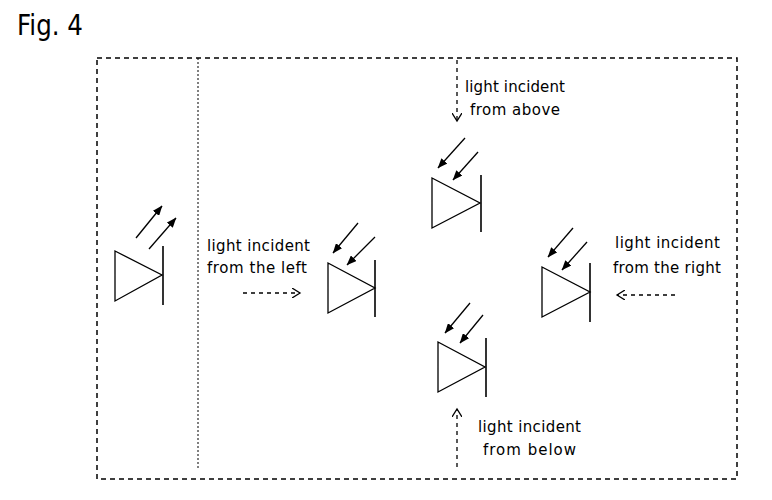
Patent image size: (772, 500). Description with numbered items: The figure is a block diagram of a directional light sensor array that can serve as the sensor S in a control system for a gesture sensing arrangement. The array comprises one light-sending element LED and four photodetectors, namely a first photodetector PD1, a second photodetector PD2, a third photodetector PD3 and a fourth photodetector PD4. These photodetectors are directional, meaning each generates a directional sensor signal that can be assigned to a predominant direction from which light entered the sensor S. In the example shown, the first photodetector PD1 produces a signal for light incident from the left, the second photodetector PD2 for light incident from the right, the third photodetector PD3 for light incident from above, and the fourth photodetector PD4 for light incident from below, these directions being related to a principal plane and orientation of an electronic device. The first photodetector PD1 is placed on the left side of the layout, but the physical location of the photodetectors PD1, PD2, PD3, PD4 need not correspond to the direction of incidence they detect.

The sensor S is at (400, 268).
The light-sending element LED is at (145, 280).
The first photodetector PD1 is at (327, 288).
The second photodetector PD2 is at (556, 291).
The third photodetector PD3 is at (428, 185).
The fourth photodetector PD4 is at (433, 366).